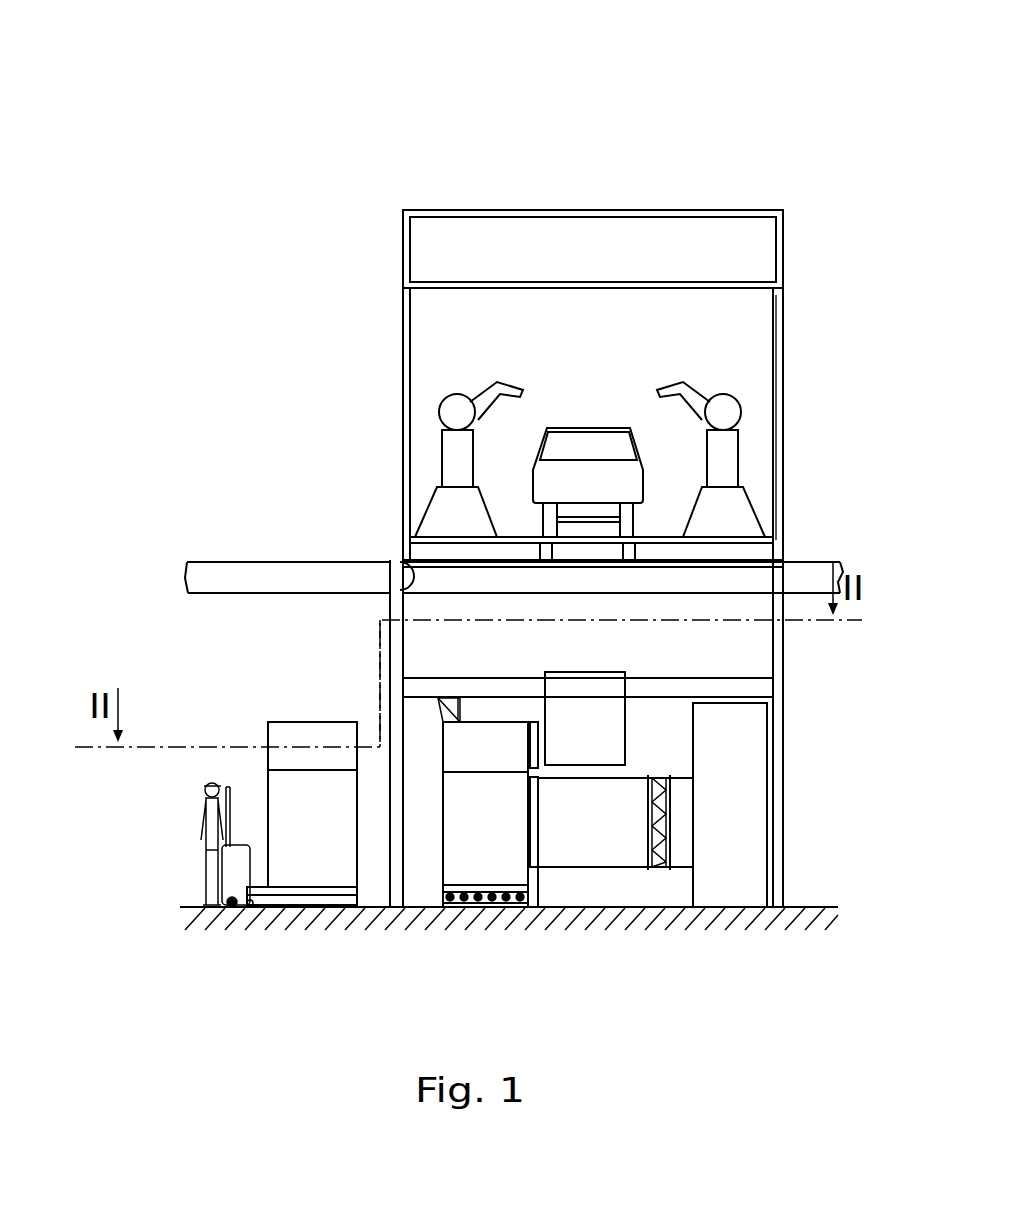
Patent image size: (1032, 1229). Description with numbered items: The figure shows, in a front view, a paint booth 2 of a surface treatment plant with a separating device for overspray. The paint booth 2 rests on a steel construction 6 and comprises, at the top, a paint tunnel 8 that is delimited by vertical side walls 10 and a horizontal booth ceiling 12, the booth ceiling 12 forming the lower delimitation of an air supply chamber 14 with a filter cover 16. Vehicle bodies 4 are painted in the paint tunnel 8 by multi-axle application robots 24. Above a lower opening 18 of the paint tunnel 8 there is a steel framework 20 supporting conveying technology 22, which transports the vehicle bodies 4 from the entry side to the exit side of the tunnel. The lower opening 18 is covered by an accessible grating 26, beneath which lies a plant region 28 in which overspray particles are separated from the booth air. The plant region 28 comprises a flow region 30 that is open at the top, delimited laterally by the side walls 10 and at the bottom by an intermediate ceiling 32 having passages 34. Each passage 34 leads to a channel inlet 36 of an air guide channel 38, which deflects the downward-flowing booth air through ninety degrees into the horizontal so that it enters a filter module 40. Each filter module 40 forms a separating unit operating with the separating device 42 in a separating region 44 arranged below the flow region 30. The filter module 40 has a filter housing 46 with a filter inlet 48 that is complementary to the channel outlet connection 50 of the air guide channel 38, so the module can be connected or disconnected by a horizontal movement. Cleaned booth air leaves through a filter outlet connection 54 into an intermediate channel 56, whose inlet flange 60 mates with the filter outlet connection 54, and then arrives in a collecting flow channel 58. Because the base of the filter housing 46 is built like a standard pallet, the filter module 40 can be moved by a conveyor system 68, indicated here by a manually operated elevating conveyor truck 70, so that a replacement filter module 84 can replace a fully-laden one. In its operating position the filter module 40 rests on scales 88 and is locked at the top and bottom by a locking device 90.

The paint booth 2 is at (418, 108).
The vehicle bodies 4 is at (588, 425).
The steel construction 6 is at (783, 643).
The paint tunnel 8 is at (504, 342).
The side walls 10 is at (403, 350).
The booth ceiling 12 is at (440, 280).
The air supply chamber 14 is at (562, 267).
The filter cover 16 is at (655, 282).
The lower opening 18 is at (398, 575).
The steel framework 20 is at (745, 547).
The conveying technology 22 is at (640, 515).
The application robots 24 is at (455, 457).
The grating 26 is at (738, 567).
The plant region 28 is at (378, 672).
The flow region 30 is at (570, 602).
The intermediate ceiling 32 is at (753, 688).
The passages 34 is at (625, 672).
The channel inlet 36 is at (627, 677).
The air guide channel 38 is at (607, 732).
The filter module 40 is at (463, 832).
The separating device 42 is at (535, 868).
The separating region 44 is at (680, 766).
The filter housing 46 is at (465, 793).
The filter inlet 48 is at (533, 723).
The channel outlet connection 50 is at (535, 725).
The filter outlet connection 54 is at (568, 892).
The intermediate channel 56 is at (637, 850).
The collecting flow channel 58 is at (740, 817).
The inlet flange 60 is at (538, 825).
The conveyor system 68 is at (285, 938).
The elevating conveyor truck 70 is at (228, 883).
The replacement filter module 84 is at (290, 855).
The scales 88 is at (475, 925).
The locking device 90 is at (437, 712).